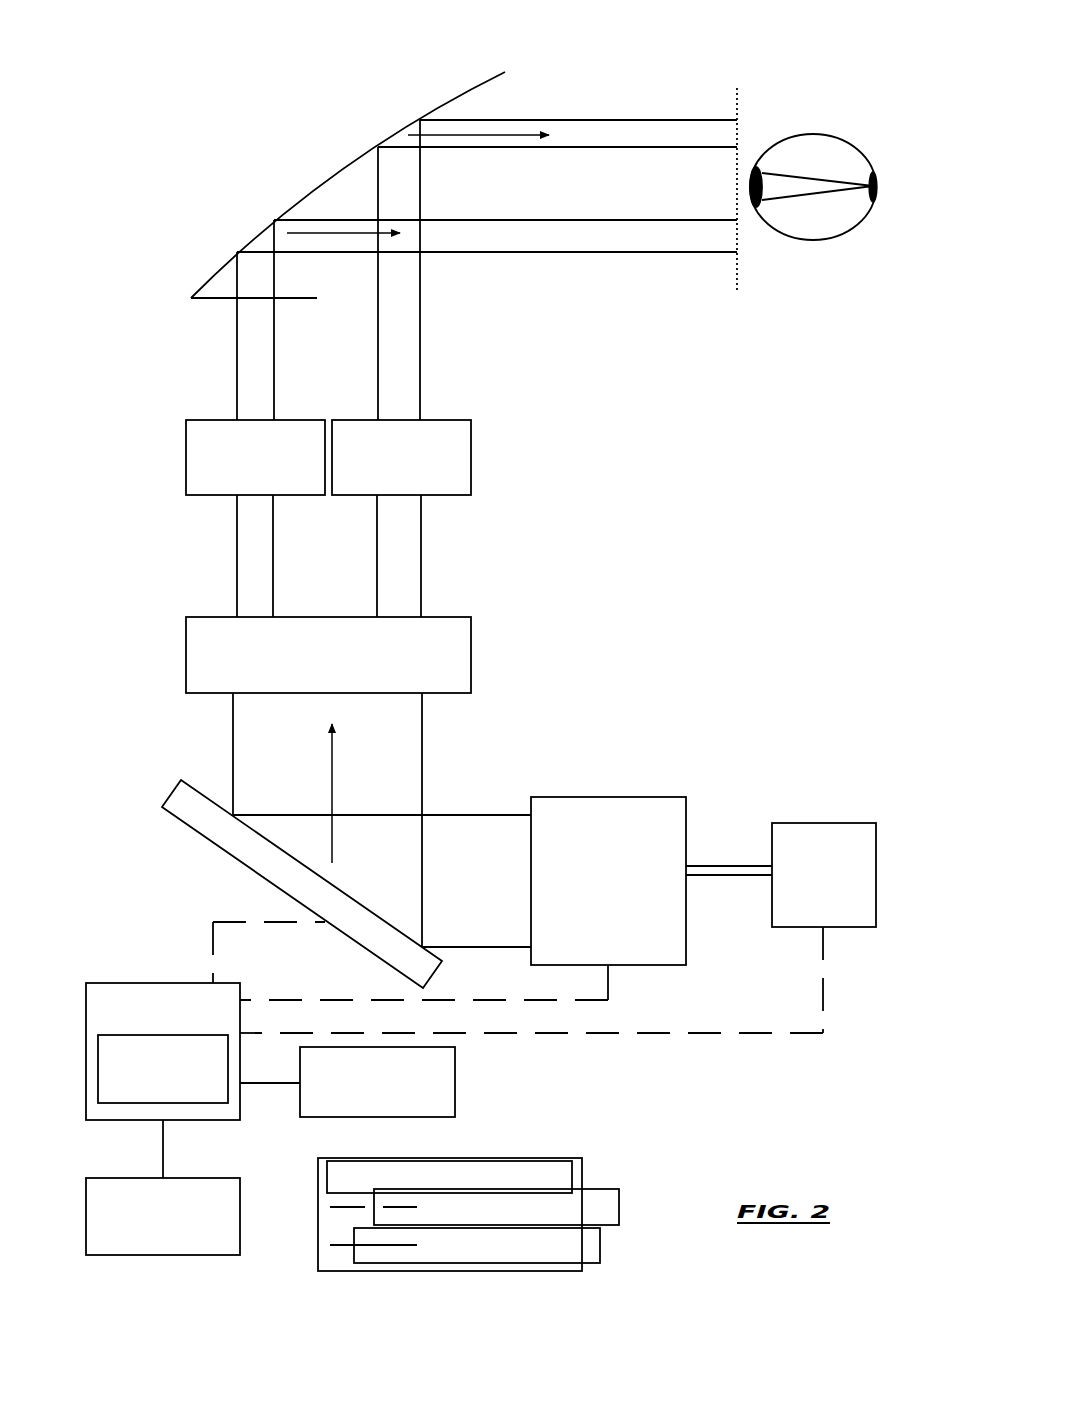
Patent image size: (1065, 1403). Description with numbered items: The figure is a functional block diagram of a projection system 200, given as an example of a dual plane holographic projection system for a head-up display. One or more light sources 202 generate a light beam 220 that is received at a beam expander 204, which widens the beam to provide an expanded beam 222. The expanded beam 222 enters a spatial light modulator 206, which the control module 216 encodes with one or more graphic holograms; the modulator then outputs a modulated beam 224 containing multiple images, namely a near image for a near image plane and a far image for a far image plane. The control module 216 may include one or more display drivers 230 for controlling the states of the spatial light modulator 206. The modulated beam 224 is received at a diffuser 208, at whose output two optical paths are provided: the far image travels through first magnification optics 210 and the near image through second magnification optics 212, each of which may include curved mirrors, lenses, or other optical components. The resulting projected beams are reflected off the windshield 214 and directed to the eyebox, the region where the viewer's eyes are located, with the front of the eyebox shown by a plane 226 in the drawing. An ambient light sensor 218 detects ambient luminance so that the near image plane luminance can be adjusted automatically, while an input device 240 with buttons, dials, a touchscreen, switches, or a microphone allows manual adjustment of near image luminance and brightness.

The projection system 200 is at (196, 39).
The light sources 202 is at (826, 823).
The beam expander 204 is at (612, 797).
The spatial light modulator 206 is at (223, 857).
The diffuser 208 is at (186, 640).
The first magnification optics 210 is at (471, 440).
The second magnification optics 212 is at (186, 438).
The windshield 214 is at (305, 192).
The control module 216 is at (108, 983).
The ambient light sensor 218 is at (110, 1178).
The light beam 220 is at (712, 866).
The expanded beam 222 is at (450, 814).
The modulated beam 224 is at (233, 733).
The eyebox plane 226 is at (737, 88).
The display drivers 230 is at (98, 1050).
The input device 240 is at (455, 1075).